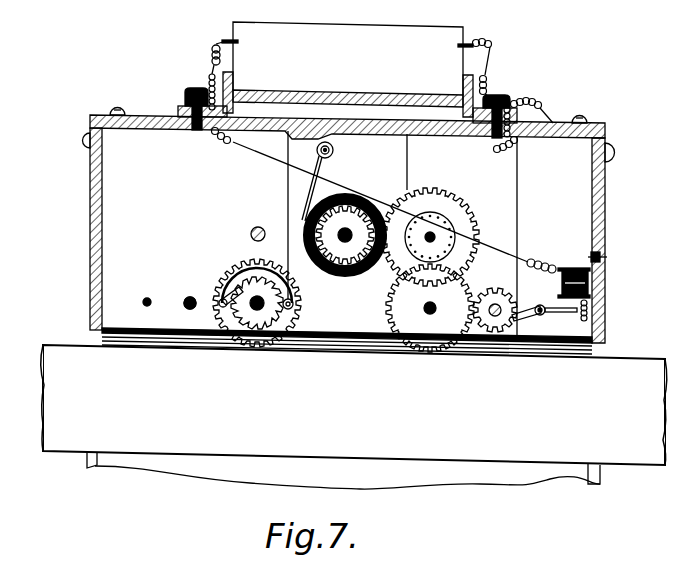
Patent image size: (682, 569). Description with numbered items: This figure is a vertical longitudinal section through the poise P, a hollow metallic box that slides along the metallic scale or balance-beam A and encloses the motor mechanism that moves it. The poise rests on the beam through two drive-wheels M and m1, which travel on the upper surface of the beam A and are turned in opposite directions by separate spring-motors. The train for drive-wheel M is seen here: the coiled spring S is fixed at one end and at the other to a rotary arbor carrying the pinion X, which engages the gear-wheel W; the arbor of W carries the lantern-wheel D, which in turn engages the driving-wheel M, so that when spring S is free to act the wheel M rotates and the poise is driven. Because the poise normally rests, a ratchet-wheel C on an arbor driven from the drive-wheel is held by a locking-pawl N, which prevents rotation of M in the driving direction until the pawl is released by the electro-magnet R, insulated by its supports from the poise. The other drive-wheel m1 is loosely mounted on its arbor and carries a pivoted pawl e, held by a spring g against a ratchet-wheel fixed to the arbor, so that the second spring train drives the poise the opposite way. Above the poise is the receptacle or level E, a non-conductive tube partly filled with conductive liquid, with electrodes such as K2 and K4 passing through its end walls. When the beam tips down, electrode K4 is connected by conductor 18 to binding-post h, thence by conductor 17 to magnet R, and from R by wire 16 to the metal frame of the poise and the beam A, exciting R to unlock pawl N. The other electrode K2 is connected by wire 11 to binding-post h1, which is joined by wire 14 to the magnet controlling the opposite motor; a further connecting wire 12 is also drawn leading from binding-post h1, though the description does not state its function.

The receptacle or level E is at (348, 69).
The electrode K4 is at (241, 42).
The electrode K2 is at (452, 46).
The conductor 18 is at (206, 58).
The binding-post h is at (178, 84).
The binding-post h1 is at (512, 96).
The wire 11 is at (489, 69).
The connecting wire 12 is at (535, 111).
The wire 14 is at (503, 154).
The conductor 17 is at (314, 225).
The pinion X is at (345, 246).
The coiled spring S is at (345, 246).
The gear-wheel W is at (430, 237).
The lantern-wheel D is at (430, 237).
The drive-wheel m1 is at (257, 303).
The spring g is at (294, 299).
The pivoted pawl e is at (221, 301).
The drive-wheel M is at (430, 308).
The ratchet-wheel C is at (495, 305).
The locking-pawl N is at (544, 318).
The wire 16 is at (574, 319).
The electro-magnet R is at (582, 275).
The scale or balance-beam A is at (354, 405).
The poise P is at (343, 472).